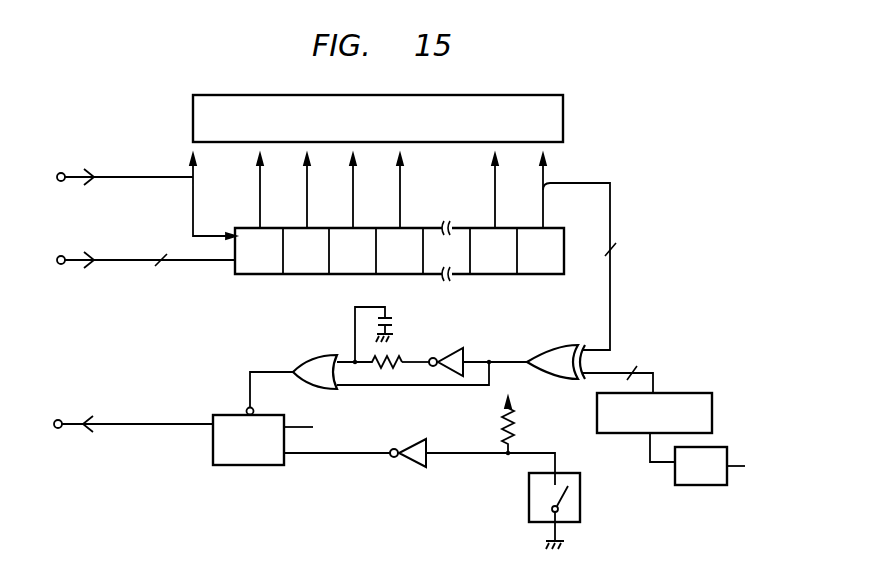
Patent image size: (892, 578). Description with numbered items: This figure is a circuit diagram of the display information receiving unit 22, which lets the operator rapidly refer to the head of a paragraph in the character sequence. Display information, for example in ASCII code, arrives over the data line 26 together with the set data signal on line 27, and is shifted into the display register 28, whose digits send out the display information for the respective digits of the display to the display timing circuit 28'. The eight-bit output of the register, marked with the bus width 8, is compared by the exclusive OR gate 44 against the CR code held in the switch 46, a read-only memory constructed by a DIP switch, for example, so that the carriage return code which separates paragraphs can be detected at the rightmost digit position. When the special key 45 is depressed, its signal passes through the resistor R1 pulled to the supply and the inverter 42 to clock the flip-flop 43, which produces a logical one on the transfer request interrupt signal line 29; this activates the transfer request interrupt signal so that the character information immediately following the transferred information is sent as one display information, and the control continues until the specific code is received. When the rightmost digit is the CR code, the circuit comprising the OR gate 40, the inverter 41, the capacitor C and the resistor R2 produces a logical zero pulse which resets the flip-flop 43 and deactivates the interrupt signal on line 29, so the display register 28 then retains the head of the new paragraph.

The display information receiving unit 22 is at (628, 218).
The data line 26 is at (127, 260).
The set data signal line 27 is at (127, 177).
The display register 28 is at (419, 217).
The display timing circuit 28' is at (406, 118).
The transfer request interrupt signal line 29 is at (121, 424).
The 8-bit bus 8 is at (399, 311).
The OR gate 40 is at (312, 354).
The inverter 41 is at (465, 350).
The inverter 42 is at (428, 446).
The flip-flop 43 is at (232, 413).
The exclusive OR gate 44 is at (548, 344).
The special key 45 is at (582, 510).
The switch 46 is at (692, 393).
The capacitor C is at (381, 335).
The resistor R1 is at (521, 415).
The resistor R2 is at (390, 357).